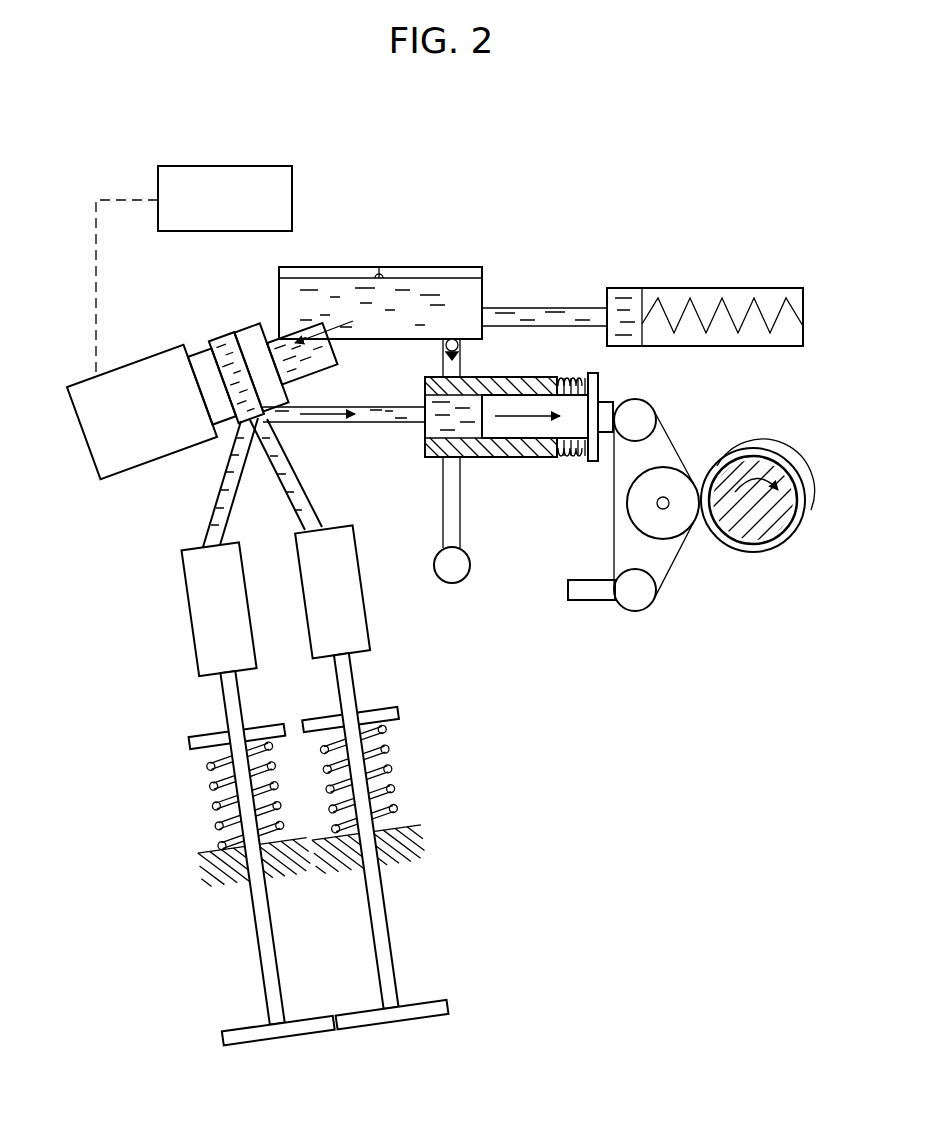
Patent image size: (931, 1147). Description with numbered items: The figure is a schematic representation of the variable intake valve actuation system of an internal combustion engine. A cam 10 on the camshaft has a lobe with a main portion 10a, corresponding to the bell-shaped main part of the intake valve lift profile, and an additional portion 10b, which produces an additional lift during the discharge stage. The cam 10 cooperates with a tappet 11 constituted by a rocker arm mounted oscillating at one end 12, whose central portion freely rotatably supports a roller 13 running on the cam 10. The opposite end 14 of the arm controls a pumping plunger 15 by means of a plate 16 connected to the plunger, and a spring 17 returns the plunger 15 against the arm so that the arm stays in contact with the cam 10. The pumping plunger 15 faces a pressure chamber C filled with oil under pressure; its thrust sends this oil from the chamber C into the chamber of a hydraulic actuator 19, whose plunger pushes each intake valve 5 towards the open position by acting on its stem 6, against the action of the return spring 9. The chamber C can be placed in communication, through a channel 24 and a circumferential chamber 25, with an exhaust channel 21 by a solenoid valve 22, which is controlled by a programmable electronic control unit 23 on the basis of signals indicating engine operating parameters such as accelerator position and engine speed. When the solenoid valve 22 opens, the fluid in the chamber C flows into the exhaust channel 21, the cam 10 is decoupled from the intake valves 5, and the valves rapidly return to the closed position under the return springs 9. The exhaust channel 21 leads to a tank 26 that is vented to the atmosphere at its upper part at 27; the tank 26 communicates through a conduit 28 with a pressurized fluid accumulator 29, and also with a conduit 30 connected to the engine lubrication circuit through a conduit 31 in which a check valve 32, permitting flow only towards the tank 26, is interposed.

The intake valve 5 is at (222, 1044).
The stem 6 is at (258, 950).
The return spring 9 is at (218, 778).
The cam 10 is at (774, 508).
The main portion of the cam lobe 10a is at (745, 432).
The additional portion of the cam lobe 10b is at (814, 500).
The tappet 11 is at (606, 516).
The end of the rocker arm 12 is at (640, 602).
The roller 13 is at (672, 470).
The opposite end of the rocker arm 14 is at (640, 398).
The pumping plunger 15 is at (520, 430).
The plate 16 is at (596, 372).
The spring 17 is at (568, 458).
The hydraulic actuator 19 is at (184, 582).
The exhaust channel 21 is at (328, 362).
The solenoid valve 22 is at (146, 352).
The programmable electronic control unit 23 is at (232, 178).
The channel 24 is at (300, 421).
The circumferential chamber 25 is at (222, 340).
The tank 26 is at (435, 305).
The vent 27 is at (385, 268).
The conduit 28 is at (540, 306).
The pressurized fluid accumulator 29 is at (685, 286).
The conduit 30 is at (460, 583).
The conduit 31 is at (443, 500).
The check valve 32 is at (462, 347).
The pressure chamber C is at (425, 430).